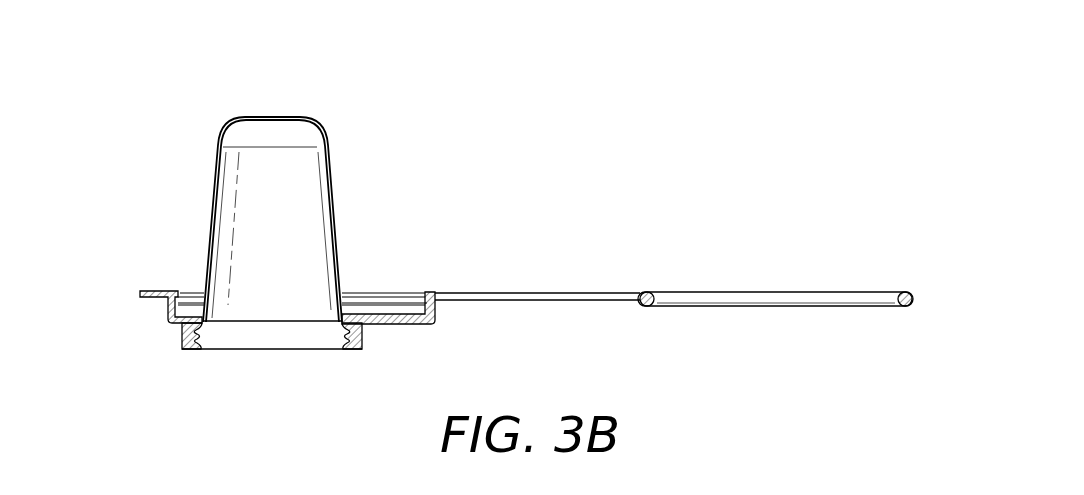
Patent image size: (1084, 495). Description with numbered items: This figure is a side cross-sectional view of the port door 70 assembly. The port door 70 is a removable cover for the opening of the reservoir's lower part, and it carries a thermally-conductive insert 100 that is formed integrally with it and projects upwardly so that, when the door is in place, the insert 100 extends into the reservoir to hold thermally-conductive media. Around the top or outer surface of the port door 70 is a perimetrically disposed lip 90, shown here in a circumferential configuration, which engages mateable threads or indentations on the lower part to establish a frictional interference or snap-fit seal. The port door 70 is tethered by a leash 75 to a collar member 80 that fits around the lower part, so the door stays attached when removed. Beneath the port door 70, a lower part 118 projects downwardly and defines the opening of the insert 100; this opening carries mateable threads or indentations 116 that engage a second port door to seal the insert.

The thermally-conductive insert 100 is at (312, 213).
The perimetrically disposed lip 90 is at (186, 298).
The port door 70 is at (400, 302).
The leash 75 is at (532, 295).
The collar member 80 is at (863, 297).
The mateable threads or indentations 116 is at (192, 342).
The lower part 118 is at (360, 342).